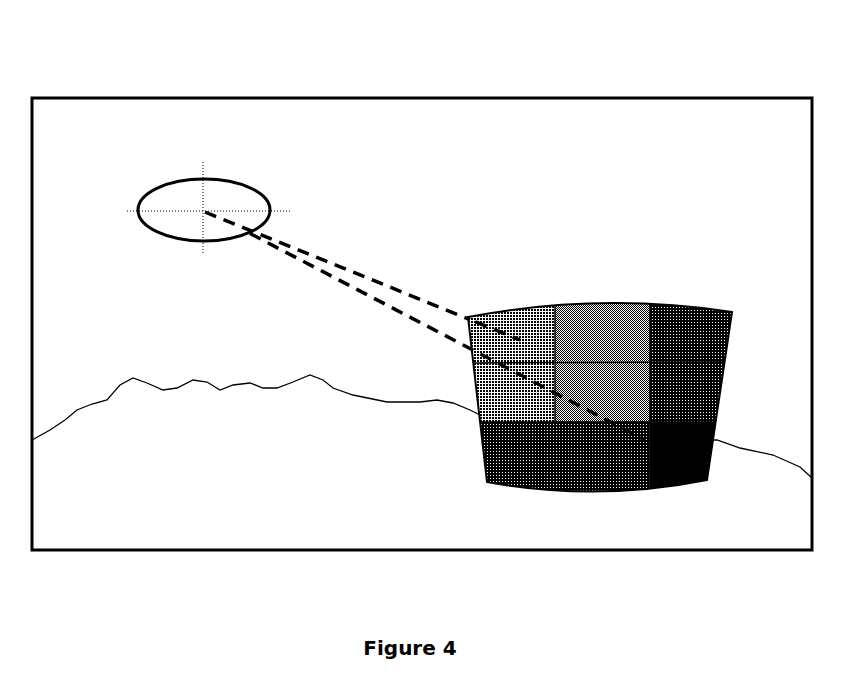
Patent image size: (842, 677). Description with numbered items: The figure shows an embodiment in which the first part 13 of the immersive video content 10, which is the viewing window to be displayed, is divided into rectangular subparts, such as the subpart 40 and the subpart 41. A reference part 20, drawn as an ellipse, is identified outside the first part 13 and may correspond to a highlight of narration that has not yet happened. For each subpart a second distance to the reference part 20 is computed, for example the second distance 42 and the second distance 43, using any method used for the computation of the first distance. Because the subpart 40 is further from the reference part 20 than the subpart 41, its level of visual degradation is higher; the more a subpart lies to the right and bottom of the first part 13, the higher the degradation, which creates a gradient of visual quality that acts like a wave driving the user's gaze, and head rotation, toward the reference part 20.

The immersive video content 10 is at (672, 97).
The first part 13 is at (555, 307).
The reference part 20 is at (193, 180).
The subpart 40 is at (667, 487).
The subpart 41 is at (532, 348).
The second distance 42 is at (430, 303).
The second distance 43 is at (337, 282).